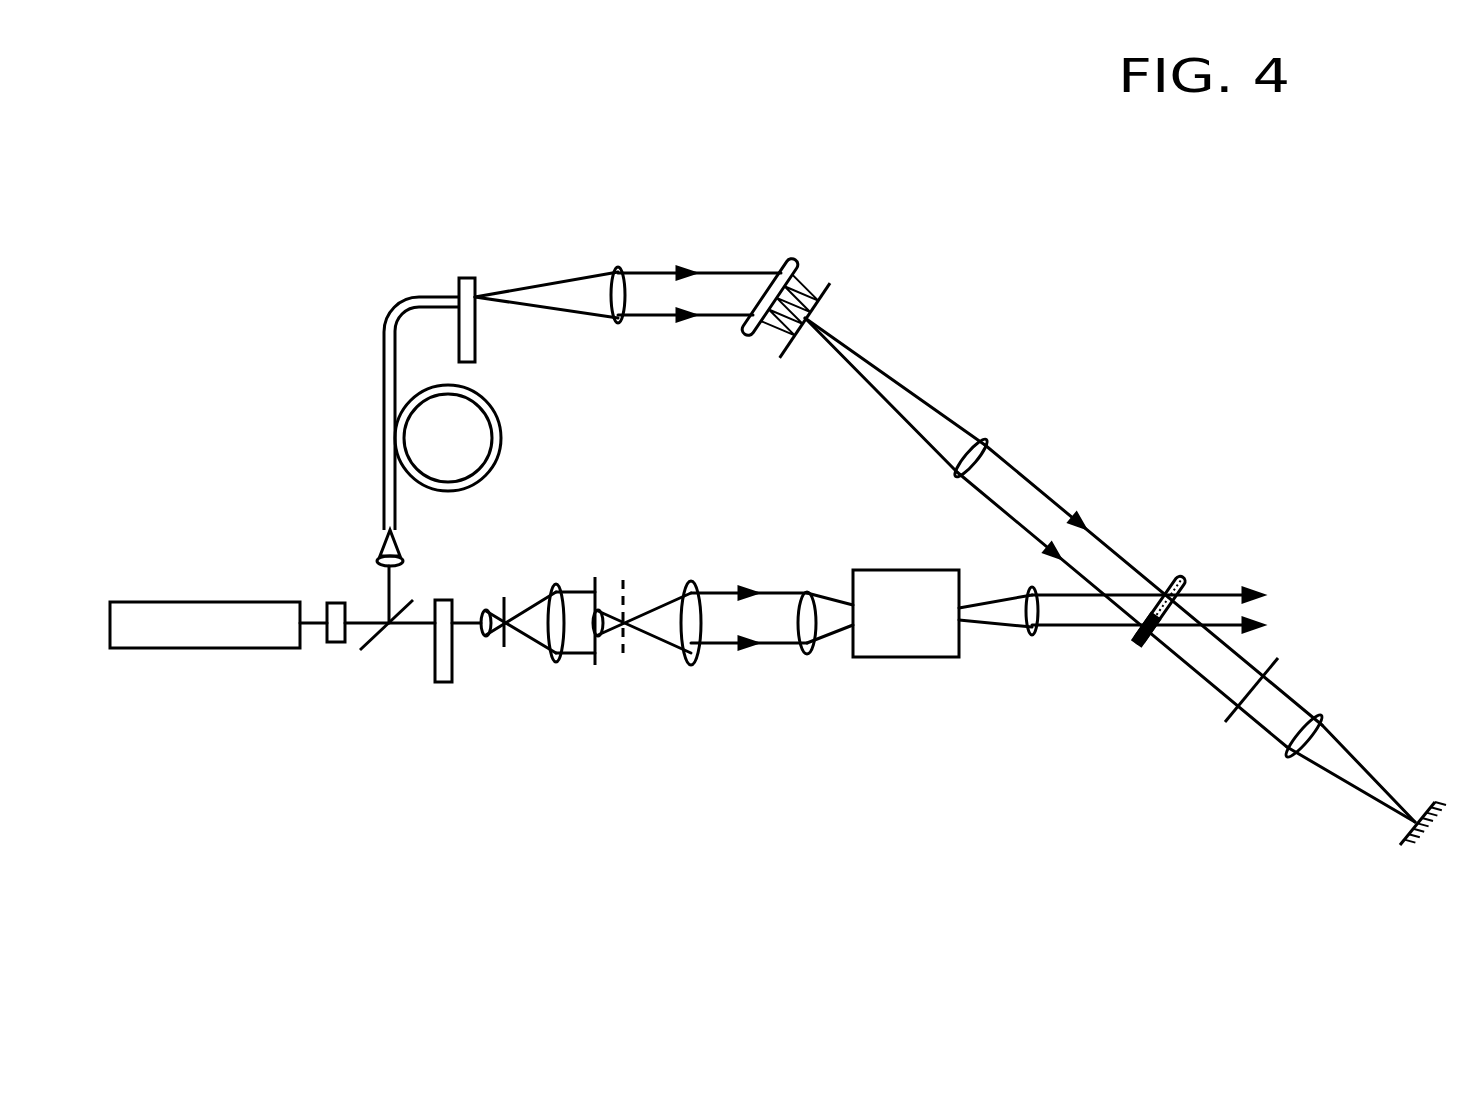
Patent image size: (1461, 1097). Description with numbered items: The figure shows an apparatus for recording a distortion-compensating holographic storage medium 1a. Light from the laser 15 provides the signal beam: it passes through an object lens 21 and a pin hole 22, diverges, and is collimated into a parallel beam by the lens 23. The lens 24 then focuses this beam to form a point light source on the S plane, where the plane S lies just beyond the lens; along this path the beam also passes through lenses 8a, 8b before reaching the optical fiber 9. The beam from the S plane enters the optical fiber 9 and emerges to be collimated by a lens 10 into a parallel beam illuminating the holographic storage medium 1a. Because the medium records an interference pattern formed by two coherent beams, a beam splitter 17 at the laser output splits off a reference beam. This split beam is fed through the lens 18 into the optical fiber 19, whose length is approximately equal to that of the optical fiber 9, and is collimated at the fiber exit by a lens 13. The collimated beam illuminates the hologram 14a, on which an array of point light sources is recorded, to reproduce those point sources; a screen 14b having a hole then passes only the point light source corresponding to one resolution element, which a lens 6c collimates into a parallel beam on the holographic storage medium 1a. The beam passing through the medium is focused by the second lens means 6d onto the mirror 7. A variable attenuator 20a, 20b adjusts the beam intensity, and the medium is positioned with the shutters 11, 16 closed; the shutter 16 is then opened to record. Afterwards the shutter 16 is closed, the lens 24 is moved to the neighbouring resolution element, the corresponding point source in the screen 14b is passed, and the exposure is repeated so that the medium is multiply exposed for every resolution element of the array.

The laser 15 is at (205, 649).
The shutter 16 is at (337, 643).
The beam splitter 17 is at (363, 653).
The lens 18 is at (367, 562).
The optical fiber 19 is at (372, 440).
The variable attenuator 20a is at (433, 683).
The variable attenuator 20b is at (465, 268).
The object lens 21 is at (496, 597).
The pin hole 22 is at (497, 653).
The lens 23 is at (557, 670).
The lens 24 is at (593, 672).
The S plane S is at (625, 597).
The lens 8a is at (690, 670).
The lens 8b is at (808, 650).
The optical fiber 9 is at (910, 660).
The lens 10 is at (1032, 650).
The holographic storage medium 1a is at (1177, 567).
The lens 6c is at (992, 432).
The second lens means 6d is at (1322, 705).
The shutter 11 is at (1225, 728).
The mirror 7 is at (1428, 797).
The lens 13 is at (617, 330).
The hologram 14a is at (793, 247).
The screen 14b is at (845, 277).